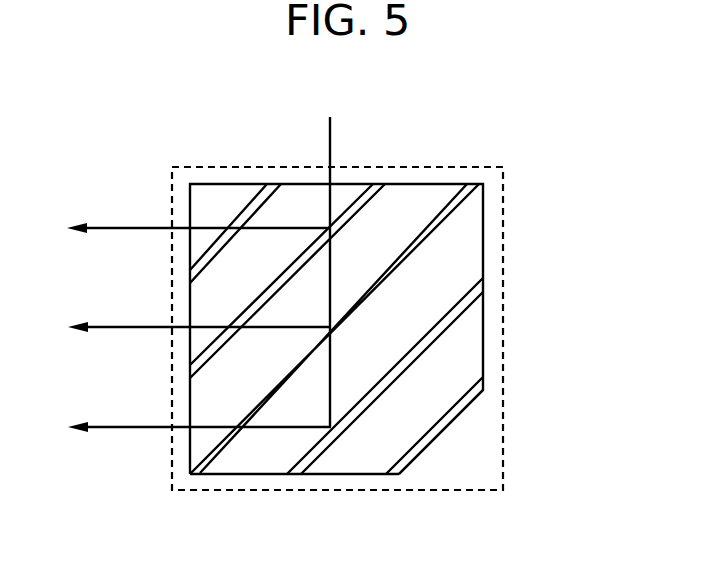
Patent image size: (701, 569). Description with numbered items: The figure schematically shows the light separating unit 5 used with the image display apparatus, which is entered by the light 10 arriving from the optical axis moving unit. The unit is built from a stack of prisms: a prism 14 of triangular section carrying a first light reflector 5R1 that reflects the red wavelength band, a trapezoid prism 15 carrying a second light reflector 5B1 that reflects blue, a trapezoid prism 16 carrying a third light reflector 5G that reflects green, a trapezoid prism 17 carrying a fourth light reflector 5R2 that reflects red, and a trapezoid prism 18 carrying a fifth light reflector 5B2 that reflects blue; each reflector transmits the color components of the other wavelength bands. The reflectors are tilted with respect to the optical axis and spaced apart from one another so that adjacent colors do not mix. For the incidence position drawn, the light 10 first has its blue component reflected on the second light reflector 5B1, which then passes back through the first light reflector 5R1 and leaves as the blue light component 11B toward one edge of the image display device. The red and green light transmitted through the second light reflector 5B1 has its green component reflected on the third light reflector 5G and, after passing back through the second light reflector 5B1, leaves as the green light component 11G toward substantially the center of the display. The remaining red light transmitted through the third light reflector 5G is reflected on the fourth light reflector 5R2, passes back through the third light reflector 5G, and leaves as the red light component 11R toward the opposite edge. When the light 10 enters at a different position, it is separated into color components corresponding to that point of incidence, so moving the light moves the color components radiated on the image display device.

The light separating unit 5 is at (460, 167).
The light 10 is at (330, 117).
The prism 14 is at (212, 198).
The trapezoid prism 15 is at (200, 300).
The trapezoid prism 16 is at (200, 407).
The trapezoid prism 17 is at (257, 462).
The trapezoid prism 18 is at (357, 462).
The first light reflector 5R1 is at (252, 207).
The second light reflector 5B1 is at (372, 200).
The third light reflector 5G is at (463, 213).
The fourth light reflector 5R2 is at (463, 312).
The fifth light reflector 5B2 is at (463, 410).
The blue light component 11B is at (102, 228).
The green light component 11G is at (108, 327).
The red light component 11R is at (113, 427).